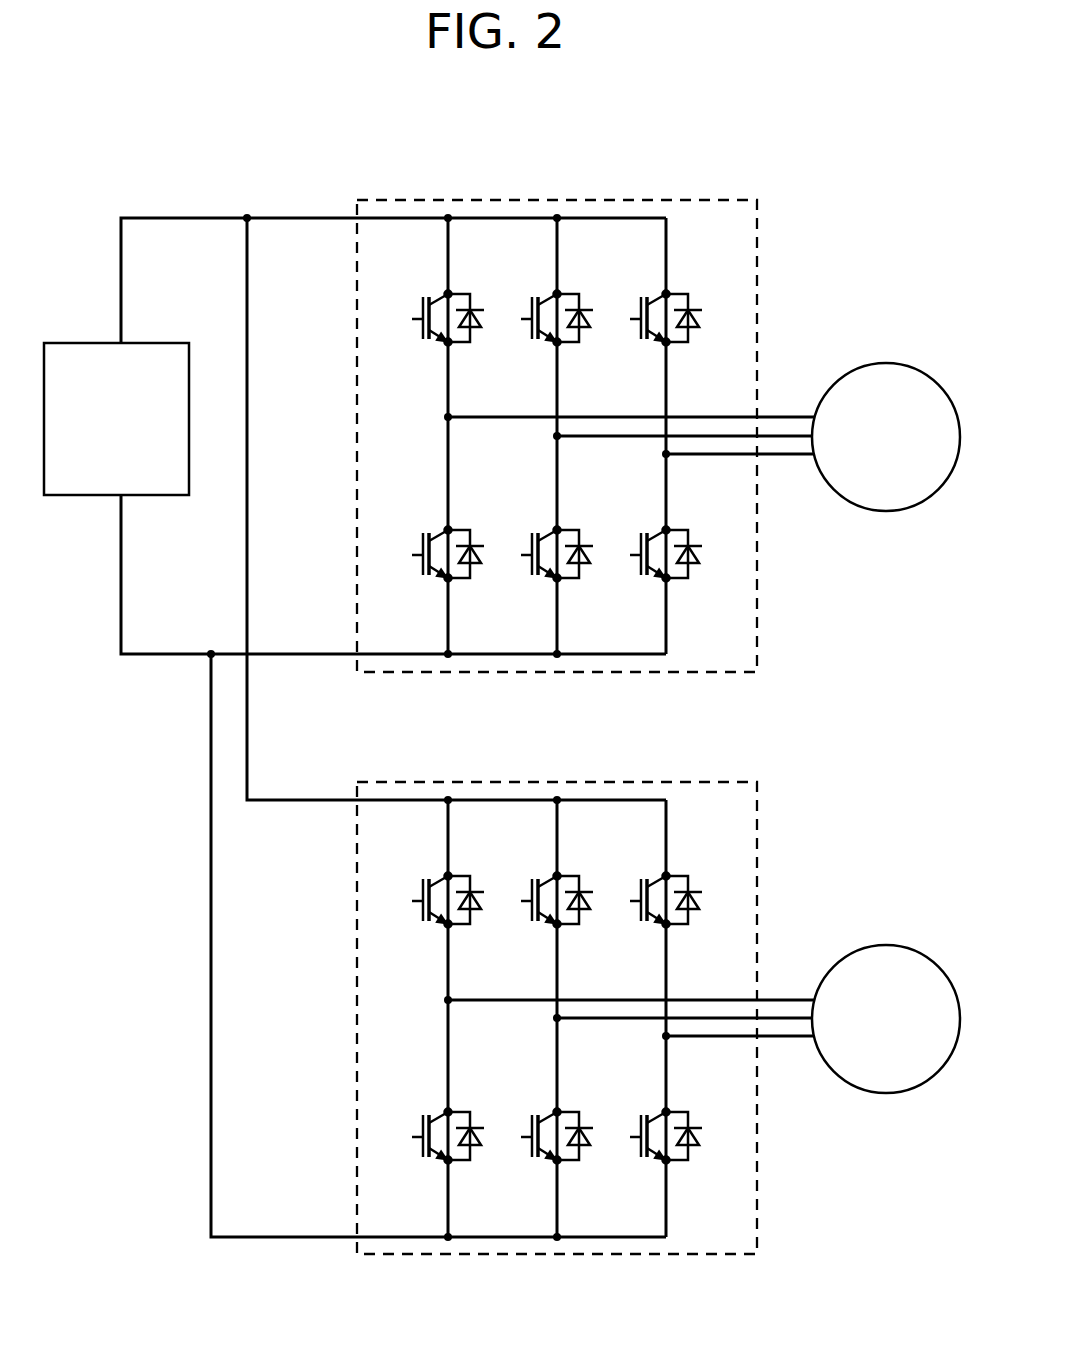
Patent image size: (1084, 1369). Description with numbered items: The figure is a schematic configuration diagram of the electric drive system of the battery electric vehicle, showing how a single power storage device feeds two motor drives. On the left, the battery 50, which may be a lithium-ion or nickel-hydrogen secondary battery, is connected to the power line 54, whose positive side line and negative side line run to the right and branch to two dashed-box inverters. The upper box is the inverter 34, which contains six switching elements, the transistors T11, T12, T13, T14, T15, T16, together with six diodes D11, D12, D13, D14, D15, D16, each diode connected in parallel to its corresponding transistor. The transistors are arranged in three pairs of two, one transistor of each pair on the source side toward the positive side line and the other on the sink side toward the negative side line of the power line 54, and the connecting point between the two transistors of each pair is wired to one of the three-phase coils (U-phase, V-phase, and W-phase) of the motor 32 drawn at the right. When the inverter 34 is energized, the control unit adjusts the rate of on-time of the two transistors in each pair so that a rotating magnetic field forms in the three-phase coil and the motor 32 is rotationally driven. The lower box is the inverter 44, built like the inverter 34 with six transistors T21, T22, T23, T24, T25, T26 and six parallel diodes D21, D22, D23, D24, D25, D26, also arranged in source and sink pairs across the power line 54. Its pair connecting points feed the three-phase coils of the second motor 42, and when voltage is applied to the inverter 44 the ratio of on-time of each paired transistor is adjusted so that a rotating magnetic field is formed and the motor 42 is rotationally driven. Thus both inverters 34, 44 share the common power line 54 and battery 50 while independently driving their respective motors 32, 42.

The battery 50 is at (147, 343).
The power line 54 is at (283, 220).
The inverter 34 is at (557, 200).
The inverter 44 is at (557, 782).
The motor 32 is at (885, 363).
The motor 42 is at (885, 945).
The transistor T11 is at (412, 293).
The transistor T12 is at (521, 293).
The transistor T13 is at (630, 293).
The transistor T14 is at (412, 529).
The transistor T15 is at (521, 529).
The transistor T16 is at (630, 529).
The transistor T21 is at (412, 875).
The transistor T22 is at (521, 875).
The transistor T23 is at (630, 875).
The transistor T24 is at (412, 1111).
The transistor T25 is at (521, 1111).
The transistor T26 is at (630, 1111).
The diode D11 is at (484, 346).
The diode D12 is at (593, 346).
The diode D13 is at (702, 346).
The diode D14 is at (484, 582).
The diode D15 is at (593, 582).
The diode D16 is at (702, 582).
The diode D21 is at (484, 928).
The diode D22 is at (593, 928).
The diode D23 is at (702, 928).
The diode D24 is at (484, 1164).
The diode D25 is at (593, 1164).
The diode D26 is at (702, 1164).